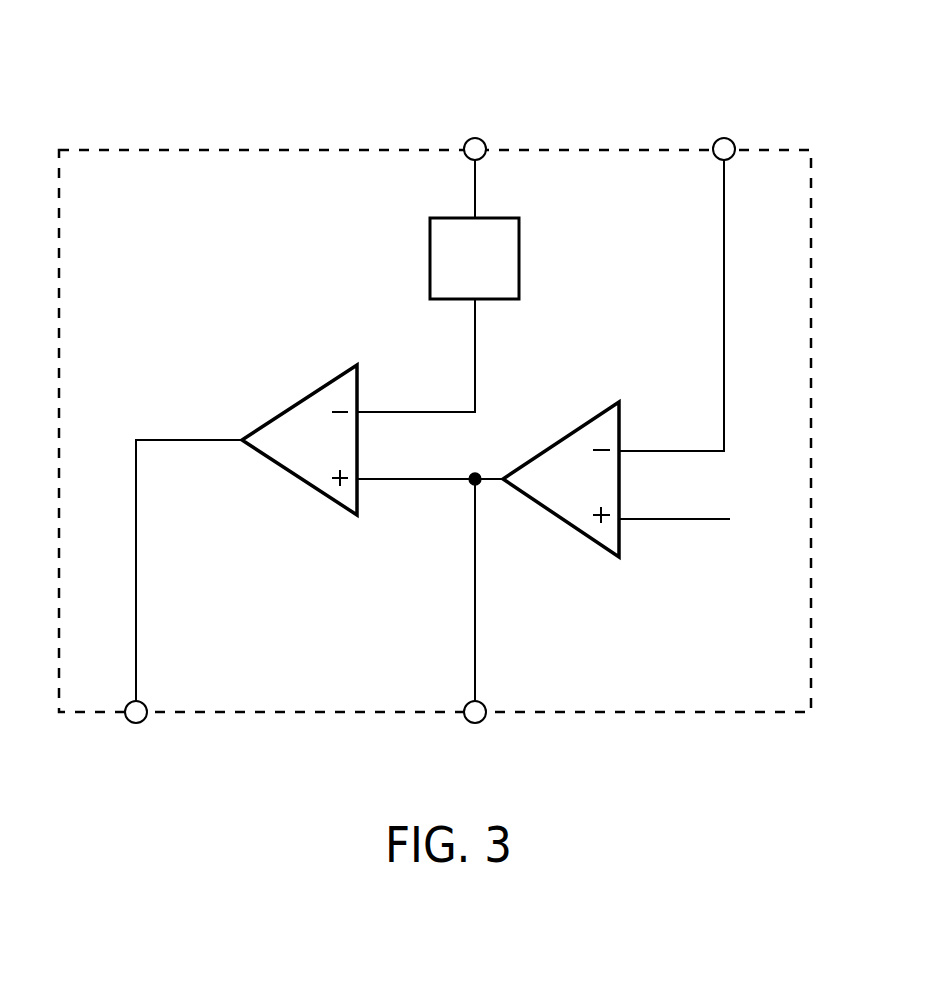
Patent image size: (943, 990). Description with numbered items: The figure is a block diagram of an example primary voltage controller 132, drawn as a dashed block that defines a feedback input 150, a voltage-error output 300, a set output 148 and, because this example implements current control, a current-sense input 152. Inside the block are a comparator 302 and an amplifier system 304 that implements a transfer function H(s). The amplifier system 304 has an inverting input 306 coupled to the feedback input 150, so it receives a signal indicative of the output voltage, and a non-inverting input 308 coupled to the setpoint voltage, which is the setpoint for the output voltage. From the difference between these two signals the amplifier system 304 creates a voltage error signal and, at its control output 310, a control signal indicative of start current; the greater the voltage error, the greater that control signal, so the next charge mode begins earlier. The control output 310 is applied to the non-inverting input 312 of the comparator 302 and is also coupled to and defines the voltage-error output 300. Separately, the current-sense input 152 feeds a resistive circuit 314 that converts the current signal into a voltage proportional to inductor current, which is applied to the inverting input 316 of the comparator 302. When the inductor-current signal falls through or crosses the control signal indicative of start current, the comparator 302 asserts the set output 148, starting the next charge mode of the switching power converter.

The primary voltage controller 132 is at (98, 148).
The current-sense input 152 is at (474, 137).
The feedback input 150 is at (725, 137).
The set output 148 is at (135, 724).
The voltage-error output 300 is at (476, 724).
The resistive circuit 314 is at (519, 261).
The inverting input of the comparator 316 is at (367, 405).
The non-inverting input of the comparator 312 is at (367, 483).
The control output 310 is at (497, 477).
The comparator 302 is at (300, 398).
The non-inverting input of the amplifier system 308 is at (235, 444).
The amplifier system 304 is at (563, 523).
The inverting input of the amplifier system 306 is at (630, 449).